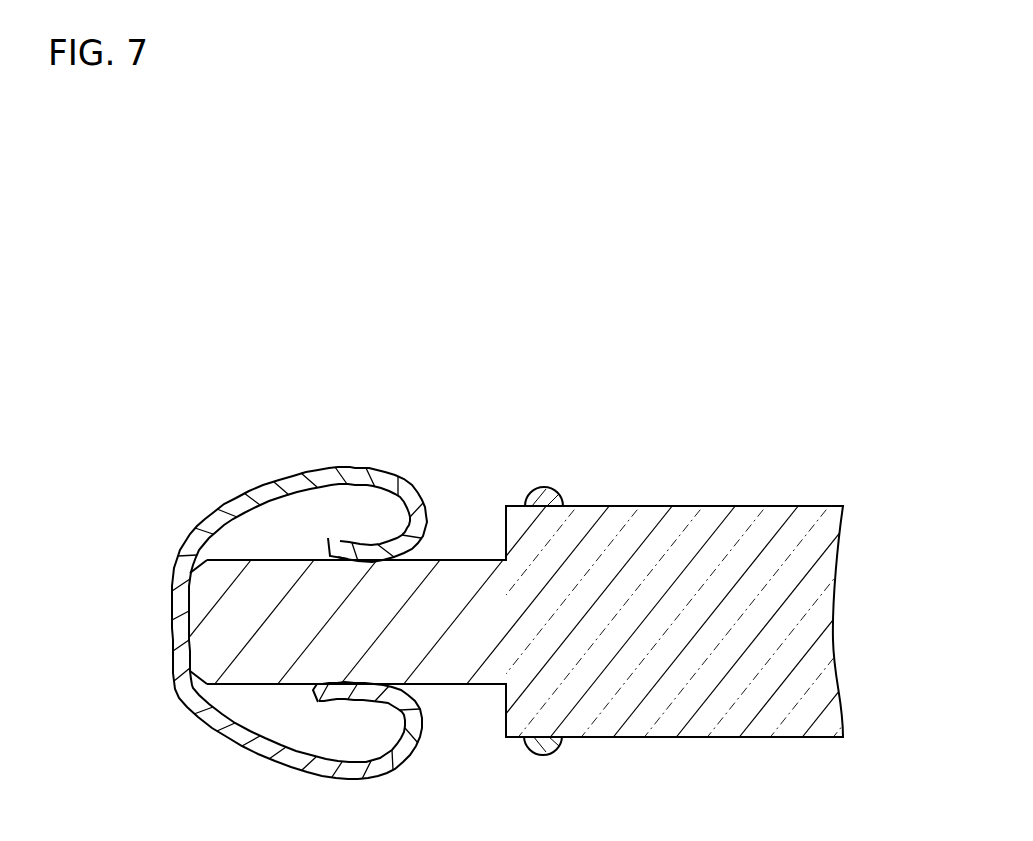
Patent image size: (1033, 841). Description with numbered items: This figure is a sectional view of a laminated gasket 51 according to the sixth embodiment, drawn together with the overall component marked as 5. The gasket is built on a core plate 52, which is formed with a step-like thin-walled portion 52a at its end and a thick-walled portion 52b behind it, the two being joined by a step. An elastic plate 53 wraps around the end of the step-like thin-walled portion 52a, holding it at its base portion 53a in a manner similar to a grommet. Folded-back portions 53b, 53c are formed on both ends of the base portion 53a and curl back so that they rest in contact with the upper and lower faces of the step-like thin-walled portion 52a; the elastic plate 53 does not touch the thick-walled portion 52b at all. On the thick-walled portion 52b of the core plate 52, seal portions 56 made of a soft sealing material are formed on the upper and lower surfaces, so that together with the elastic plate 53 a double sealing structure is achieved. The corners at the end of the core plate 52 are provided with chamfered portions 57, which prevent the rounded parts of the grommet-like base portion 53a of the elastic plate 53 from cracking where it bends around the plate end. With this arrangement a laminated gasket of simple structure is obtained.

The terminal assembly 5 is at (126, 648).
The laminated gasket 51 is at (668, 462).
The core plate 52 is at (788, 723).
The step-like thin-walled portion 52a is at (267, 647).
The thick-walled portion 52b is at (763, 520).
The elastic plate 53 is at (325, 466).
The base portion 53a is at (218, 515).
The folded-back portion 53b is at (373, 547).
The folded-back portion 53c is at (367, 697).
The seal portions 56 is at (547, 490).
The chamfered portions 57 is at (197, 562).